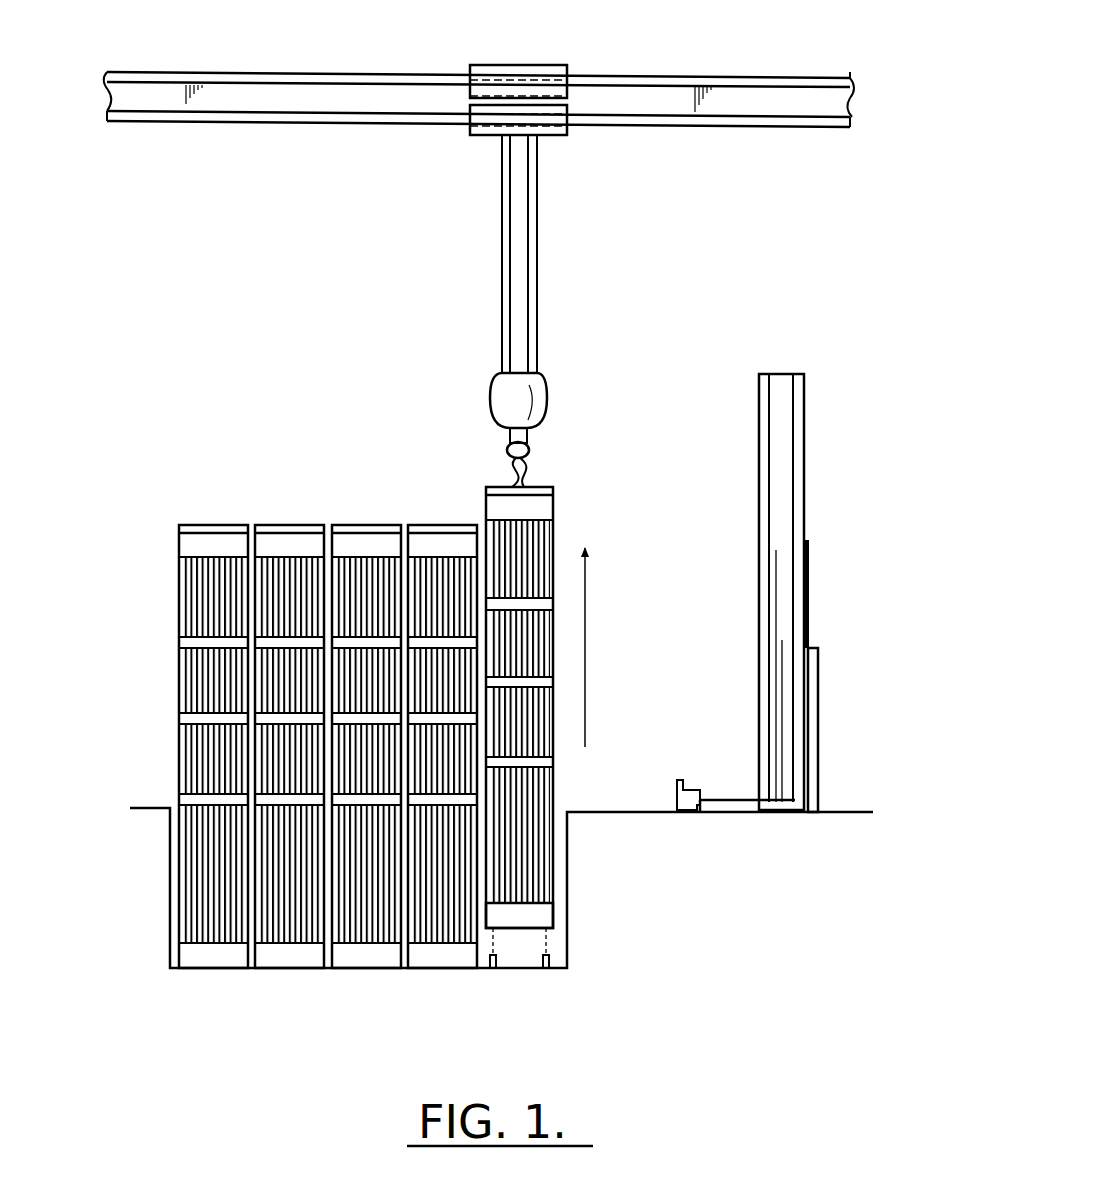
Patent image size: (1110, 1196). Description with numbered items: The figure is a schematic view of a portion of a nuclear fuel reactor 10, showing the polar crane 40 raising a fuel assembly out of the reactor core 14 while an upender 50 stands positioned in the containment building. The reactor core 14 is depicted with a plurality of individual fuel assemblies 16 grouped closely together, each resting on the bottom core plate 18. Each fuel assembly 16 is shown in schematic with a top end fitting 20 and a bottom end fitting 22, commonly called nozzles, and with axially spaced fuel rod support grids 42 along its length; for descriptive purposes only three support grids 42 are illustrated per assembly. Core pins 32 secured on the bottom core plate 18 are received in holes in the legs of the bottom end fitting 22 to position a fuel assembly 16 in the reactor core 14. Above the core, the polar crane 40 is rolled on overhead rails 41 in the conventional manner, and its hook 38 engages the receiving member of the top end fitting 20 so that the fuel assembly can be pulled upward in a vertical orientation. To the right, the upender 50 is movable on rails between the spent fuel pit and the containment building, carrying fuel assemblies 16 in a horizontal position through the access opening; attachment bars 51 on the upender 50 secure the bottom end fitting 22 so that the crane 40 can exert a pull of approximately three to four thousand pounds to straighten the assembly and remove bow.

The nuclear fuel reactor 10 is at (764, 272).
The reactor core 14 is at (270, 643).
The fuel assemblies 16 is at (438, 524).
The bottom core plate 18 is at (567, 969).
The top end fitting 20 is at (572, 713).
The bottom end fitting 22 is at (555, 915).
The core pins 32 is at (543, 962).
The hook 38 is at (525, 455).
The polar crane 40 is at (555, 140).
The overhead rails 41 is at (626, 77).
The fuel rod support grids 42 is at (182, 797).
The upender 50 is at (805, 425).
The attachment bars 51 is at (677, 797).